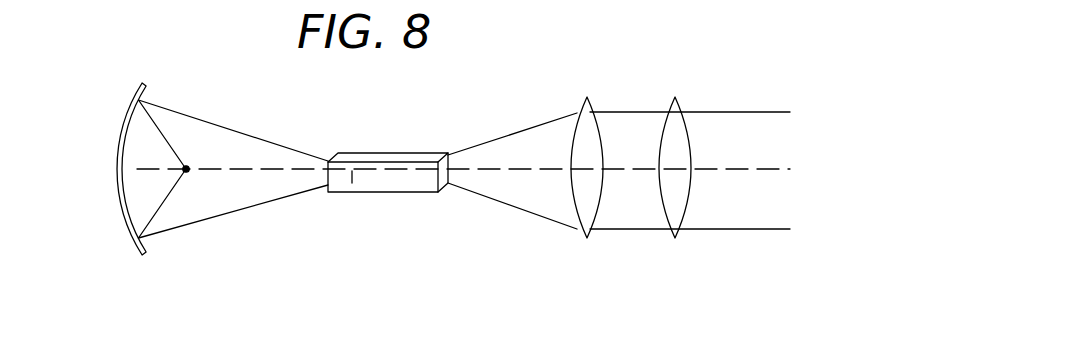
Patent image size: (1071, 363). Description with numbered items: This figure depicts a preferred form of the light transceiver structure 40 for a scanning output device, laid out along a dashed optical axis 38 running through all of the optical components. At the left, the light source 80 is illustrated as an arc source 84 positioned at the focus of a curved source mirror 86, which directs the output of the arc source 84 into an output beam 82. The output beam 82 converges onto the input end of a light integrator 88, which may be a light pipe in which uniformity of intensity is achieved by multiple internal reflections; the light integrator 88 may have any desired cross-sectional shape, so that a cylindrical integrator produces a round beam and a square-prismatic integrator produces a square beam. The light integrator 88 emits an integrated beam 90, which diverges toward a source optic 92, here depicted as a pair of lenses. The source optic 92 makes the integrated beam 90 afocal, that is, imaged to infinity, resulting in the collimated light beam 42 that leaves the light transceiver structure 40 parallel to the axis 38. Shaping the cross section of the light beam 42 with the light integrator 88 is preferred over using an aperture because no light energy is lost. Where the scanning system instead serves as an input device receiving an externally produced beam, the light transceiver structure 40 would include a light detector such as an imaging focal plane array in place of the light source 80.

The optical axis 38 is at (742, 170).
The light transceiver structure 40 is at (332, 267).
The light beam 42 is at (746, 112).
The light source 80 is at (193, 233).
The output beam 82 is at (262, 205).
The arc source 84 is at (188, 167).
The source mirror 86 is at (138, 99).
The light integrator 88 is at (398, 153).
The integrated beam 90 is at (508, 136).
The source optic 92 is at (687, 243).